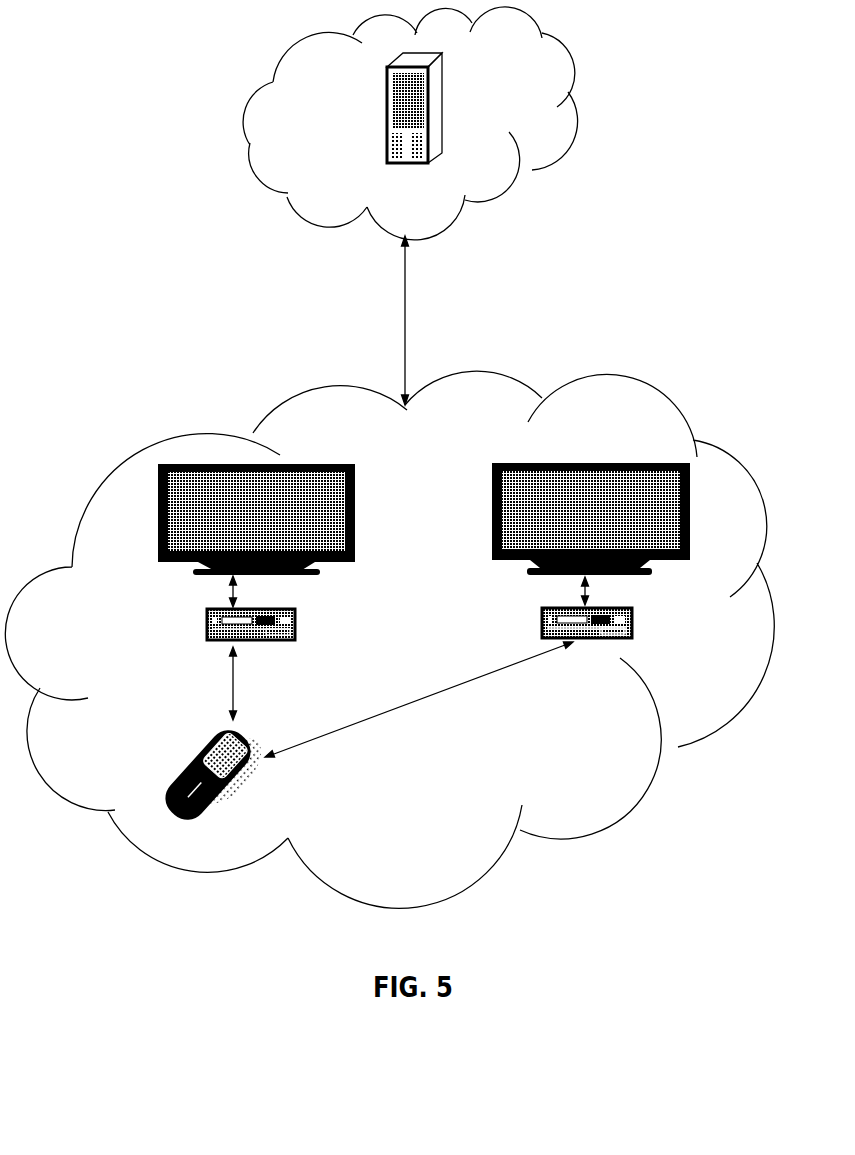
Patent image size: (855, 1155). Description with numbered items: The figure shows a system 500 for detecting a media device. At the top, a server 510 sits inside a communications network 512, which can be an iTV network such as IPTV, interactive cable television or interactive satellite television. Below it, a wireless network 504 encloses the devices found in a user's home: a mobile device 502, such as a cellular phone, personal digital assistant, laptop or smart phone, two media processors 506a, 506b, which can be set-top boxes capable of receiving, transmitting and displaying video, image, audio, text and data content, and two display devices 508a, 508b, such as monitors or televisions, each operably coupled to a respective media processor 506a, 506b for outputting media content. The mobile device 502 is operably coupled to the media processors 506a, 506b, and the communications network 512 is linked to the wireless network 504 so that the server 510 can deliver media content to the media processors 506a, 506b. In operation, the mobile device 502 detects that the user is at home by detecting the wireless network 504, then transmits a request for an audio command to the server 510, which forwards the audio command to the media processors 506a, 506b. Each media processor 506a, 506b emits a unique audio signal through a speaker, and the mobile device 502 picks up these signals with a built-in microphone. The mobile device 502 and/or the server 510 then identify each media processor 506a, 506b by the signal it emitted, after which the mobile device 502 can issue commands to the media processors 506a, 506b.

The system 500 is at (435, 956).
The mobile device 502 is at (365, 739).
The wireless network 504 is at (389, 629).
The media processor 506a is at (278, 608).
The media processor 506b is at (617, 607).
The display device 508a is at (256, 519).
The display device 508b is at (591, 519).
The server 510 is at (387, 108).
The communications network 512 is at (500, 123).